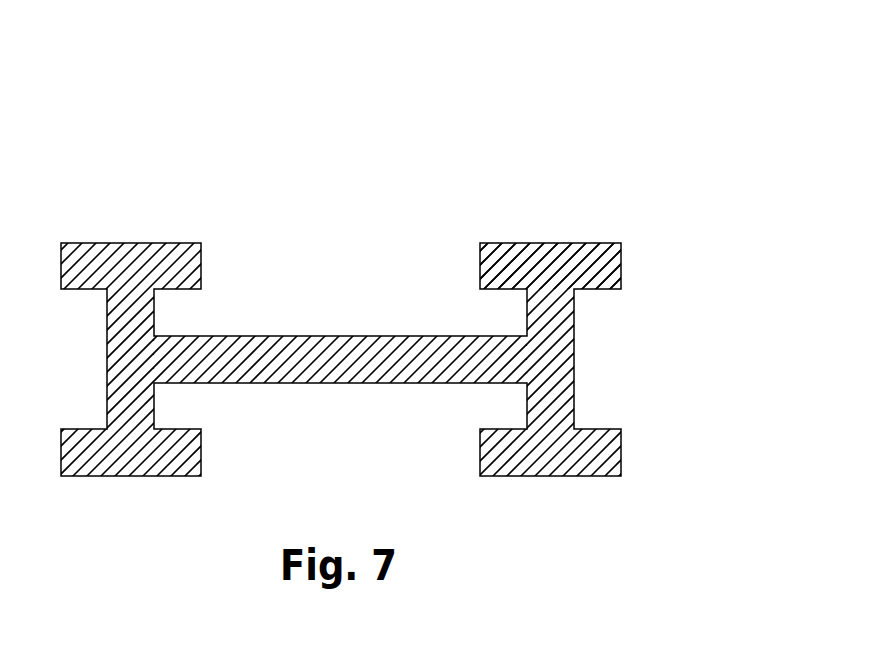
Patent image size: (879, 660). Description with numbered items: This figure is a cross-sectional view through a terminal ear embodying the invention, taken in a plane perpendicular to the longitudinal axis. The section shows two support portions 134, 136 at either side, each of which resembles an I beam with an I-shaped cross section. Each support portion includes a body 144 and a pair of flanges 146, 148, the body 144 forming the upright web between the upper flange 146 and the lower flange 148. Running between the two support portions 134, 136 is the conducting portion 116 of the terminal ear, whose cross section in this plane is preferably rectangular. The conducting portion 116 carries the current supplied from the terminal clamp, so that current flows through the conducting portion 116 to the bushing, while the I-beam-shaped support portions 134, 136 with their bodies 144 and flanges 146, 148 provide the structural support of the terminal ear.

The conducting portion 116 is at (310, 336).
The support portion 134 is at (132, 243).
The support portion 136 is at (515, 243).
The body 144 is at (574, 338).
The flange 146 is at (583, 243).
The flange 148 is at (622, 435).